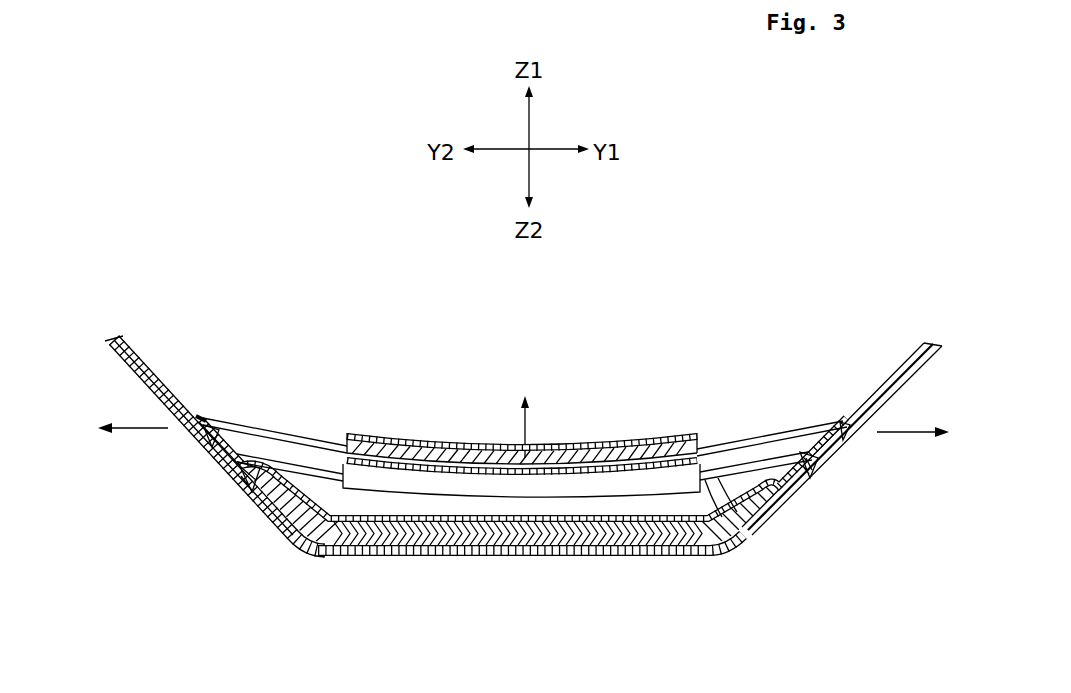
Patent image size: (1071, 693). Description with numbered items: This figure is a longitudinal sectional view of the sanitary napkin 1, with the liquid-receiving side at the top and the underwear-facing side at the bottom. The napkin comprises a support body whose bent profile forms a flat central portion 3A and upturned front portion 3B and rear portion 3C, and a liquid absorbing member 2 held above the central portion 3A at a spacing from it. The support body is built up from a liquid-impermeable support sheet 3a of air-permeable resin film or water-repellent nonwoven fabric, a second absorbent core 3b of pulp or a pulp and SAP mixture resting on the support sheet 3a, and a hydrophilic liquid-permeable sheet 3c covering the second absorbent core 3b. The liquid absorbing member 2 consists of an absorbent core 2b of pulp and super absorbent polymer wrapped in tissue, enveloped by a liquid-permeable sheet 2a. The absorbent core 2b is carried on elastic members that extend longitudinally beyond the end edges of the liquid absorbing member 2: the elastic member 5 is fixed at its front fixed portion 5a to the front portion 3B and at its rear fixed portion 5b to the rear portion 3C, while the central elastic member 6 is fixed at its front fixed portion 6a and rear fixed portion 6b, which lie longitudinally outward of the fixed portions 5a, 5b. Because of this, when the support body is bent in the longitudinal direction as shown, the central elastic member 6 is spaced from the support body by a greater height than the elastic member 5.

The sanitary napkin 1 is at (698, 306).
The liquid absorbing member 2 is at (587, 422).
The liquid-permeable sheet 2a is at (395, 432).
The absorbent core 2b is at (476, 436).
The central portion 3A is at (576, 558).
The front portion 3B is at (891, 393).
The rear portion 3C is at (143, 355).
The support sheet 3a is at (467, 555).
The second absorbent core 3b is at (397, 545).
The liquid-permeable sheet 3c is at (345, 556).
The elastic member 5 is at (695, 550).
The front fixed portion 5a is at (800, 448).
The rear fixed portion 5b is at (240, 447).
The central elastic member 6 is at (725, 447).
The front fixed portion 6a is at (842, 422).
The rear fixed portion 6b is at (198, 417).